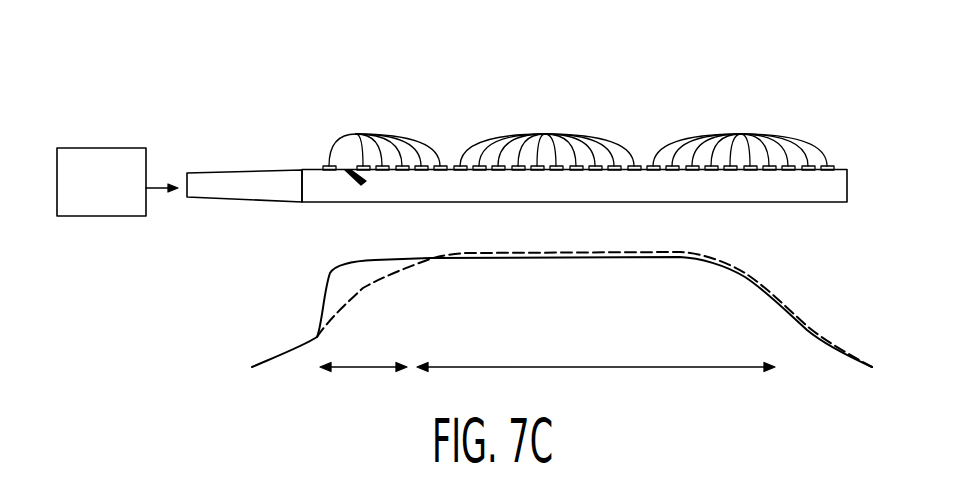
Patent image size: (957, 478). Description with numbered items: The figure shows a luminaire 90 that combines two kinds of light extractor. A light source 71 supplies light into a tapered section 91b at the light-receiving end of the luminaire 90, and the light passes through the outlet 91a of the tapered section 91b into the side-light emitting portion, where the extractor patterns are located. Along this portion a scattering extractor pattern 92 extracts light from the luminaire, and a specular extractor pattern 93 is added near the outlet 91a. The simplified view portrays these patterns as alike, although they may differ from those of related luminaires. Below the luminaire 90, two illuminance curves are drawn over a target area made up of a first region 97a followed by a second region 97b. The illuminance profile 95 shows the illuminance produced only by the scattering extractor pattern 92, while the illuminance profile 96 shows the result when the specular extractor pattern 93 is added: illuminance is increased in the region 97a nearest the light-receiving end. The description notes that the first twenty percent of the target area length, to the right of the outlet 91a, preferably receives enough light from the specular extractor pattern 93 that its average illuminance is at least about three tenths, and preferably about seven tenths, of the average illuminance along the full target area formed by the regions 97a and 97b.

The light source 71 is at (105, 148).
The luminaire 90 is at (218, 72).
The outlet 91a is at (302, 170).
The tapered section 91b is at (220, 197).
The scattering extractor pattern 92 is at (578, 134).
The specular extractor pattern 93 is at (348, 178).
The illuminance profile 95 is at (393, 270).
The illuminance profile 96 is at (371, 262).
The region 97a is at (360, 368).
The region 97b is at (527, 368).